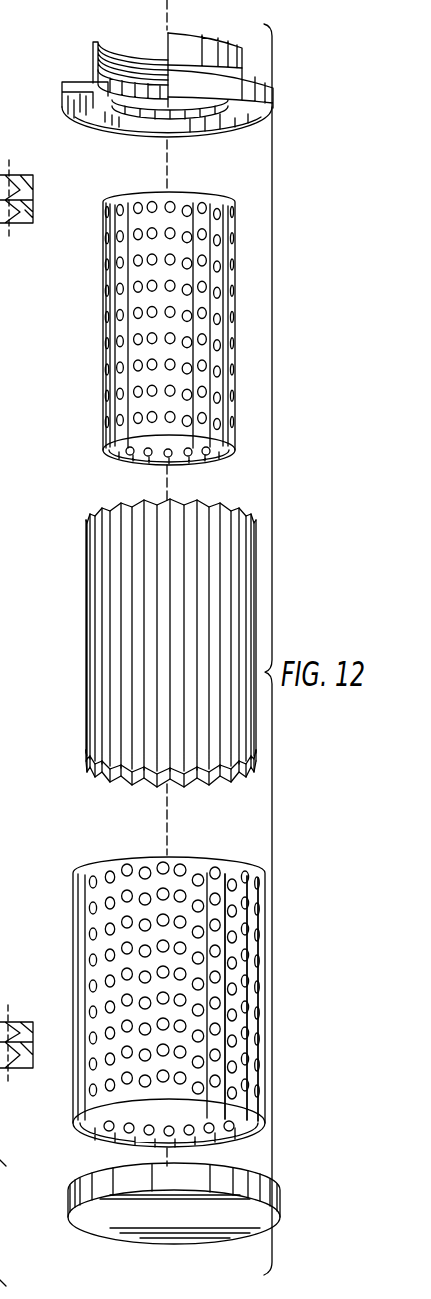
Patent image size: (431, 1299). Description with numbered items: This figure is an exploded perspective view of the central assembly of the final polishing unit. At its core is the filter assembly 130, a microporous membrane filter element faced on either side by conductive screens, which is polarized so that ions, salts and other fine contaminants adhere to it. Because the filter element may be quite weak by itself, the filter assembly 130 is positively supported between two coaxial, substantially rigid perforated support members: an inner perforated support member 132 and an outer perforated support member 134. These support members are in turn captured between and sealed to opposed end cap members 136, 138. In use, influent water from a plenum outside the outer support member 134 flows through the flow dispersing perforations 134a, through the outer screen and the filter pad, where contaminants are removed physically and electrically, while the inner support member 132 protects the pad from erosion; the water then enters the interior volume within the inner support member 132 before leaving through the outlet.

The end cap member 138 is at (193, 140).
The inner perforated support member 132 is at (103, 362).
The filter assembly 130 is at (86, 651).
The outer perforated support member 134 is at (74, 928).
The flow dispersing perforations 134a is at (255, 1012).
The end cap member 136 is at (168, 1222).